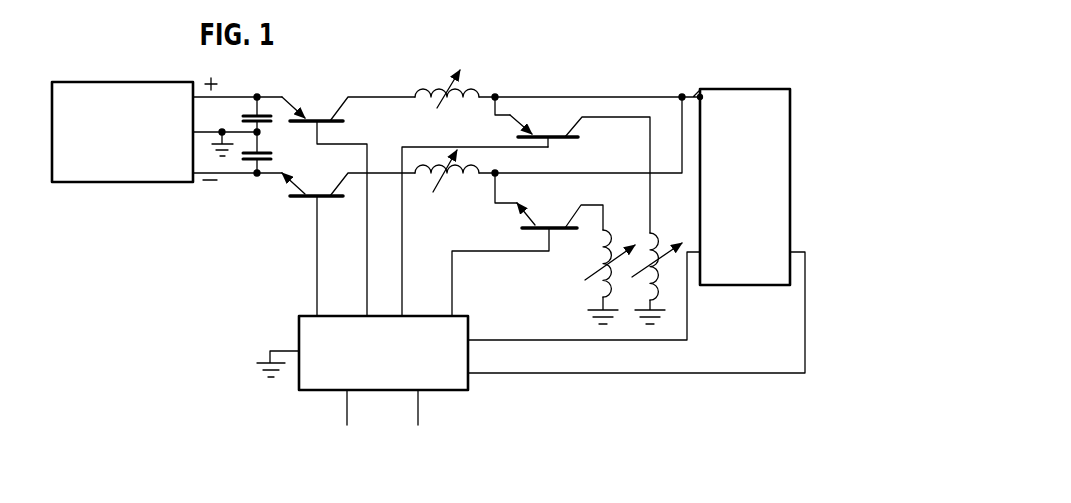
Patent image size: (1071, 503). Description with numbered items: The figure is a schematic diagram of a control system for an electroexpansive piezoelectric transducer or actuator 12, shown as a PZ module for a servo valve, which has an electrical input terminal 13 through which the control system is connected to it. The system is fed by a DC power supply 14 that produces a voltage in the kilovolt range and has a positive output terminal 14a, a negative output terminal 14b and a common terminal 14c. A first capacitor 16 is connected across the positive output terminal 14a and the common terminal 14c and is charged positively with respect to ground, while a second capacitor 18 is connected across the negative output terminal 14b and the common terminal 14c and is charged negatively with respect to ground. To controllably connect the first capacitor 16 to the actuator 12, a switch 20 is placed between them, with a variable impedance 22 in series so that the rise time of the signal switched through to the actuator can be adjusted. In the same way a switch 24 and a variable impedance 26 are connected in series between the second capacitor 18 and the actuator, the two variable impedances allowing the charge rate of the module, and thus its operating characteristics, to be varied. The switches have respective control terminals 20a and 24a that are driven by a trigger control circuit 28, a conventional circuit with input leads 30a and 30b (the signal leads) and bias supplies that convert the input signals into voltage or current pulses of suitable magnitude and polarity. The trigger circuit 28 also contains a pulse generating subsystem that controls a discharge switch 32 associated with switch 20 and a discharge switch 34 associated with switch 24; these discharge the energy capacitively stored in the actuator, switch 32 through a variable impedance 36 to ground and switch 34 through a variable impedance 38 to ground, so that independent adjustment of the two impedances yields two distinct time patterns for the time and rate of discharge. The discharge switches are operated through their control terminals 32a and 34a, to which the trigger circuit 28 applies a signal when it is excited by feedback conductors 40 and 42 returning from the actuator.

The actuator 12 is at (745, 88).
The electrical input terminal 13 is at (697, 96).
The DC power supply 14 is at (133, 82).
The positive output terminal 14a is at (200, 90).
The negative output terminal 14b is at (198, 183).
The common terminal 14c is at (201, 132).
The first capacitor 16 is at (256, 96).
The second capacitor 18 is at (257, 174).
The switch 20 is at (306, 116).
The control terminal 20a is at (334, 143).
The variable impedance 22 is at (440, 88).
The switch 24 is at (300, 200).
The control terminal 24a is at (317, 212).
The variable impedance 26 is at (436, 166).
The trigger control circuit 28 is at (483, 300).
The input lead 30a is at (347, 418).
The input lead 30b is at (418, 418).
The discharge switch 32 is at (548, 130).
The control terminal 32a is at (548, 146).
The discharge switch 34 is at (548, 226).
The control terminal 34a is at (520, 250).
The variable impedance 36 is at (656, 290).
The variable impedance 38 is at (600, 285).
The feedback conductor 40 is at (585, 341).
The feedback conductor 42 is at (617, 374).